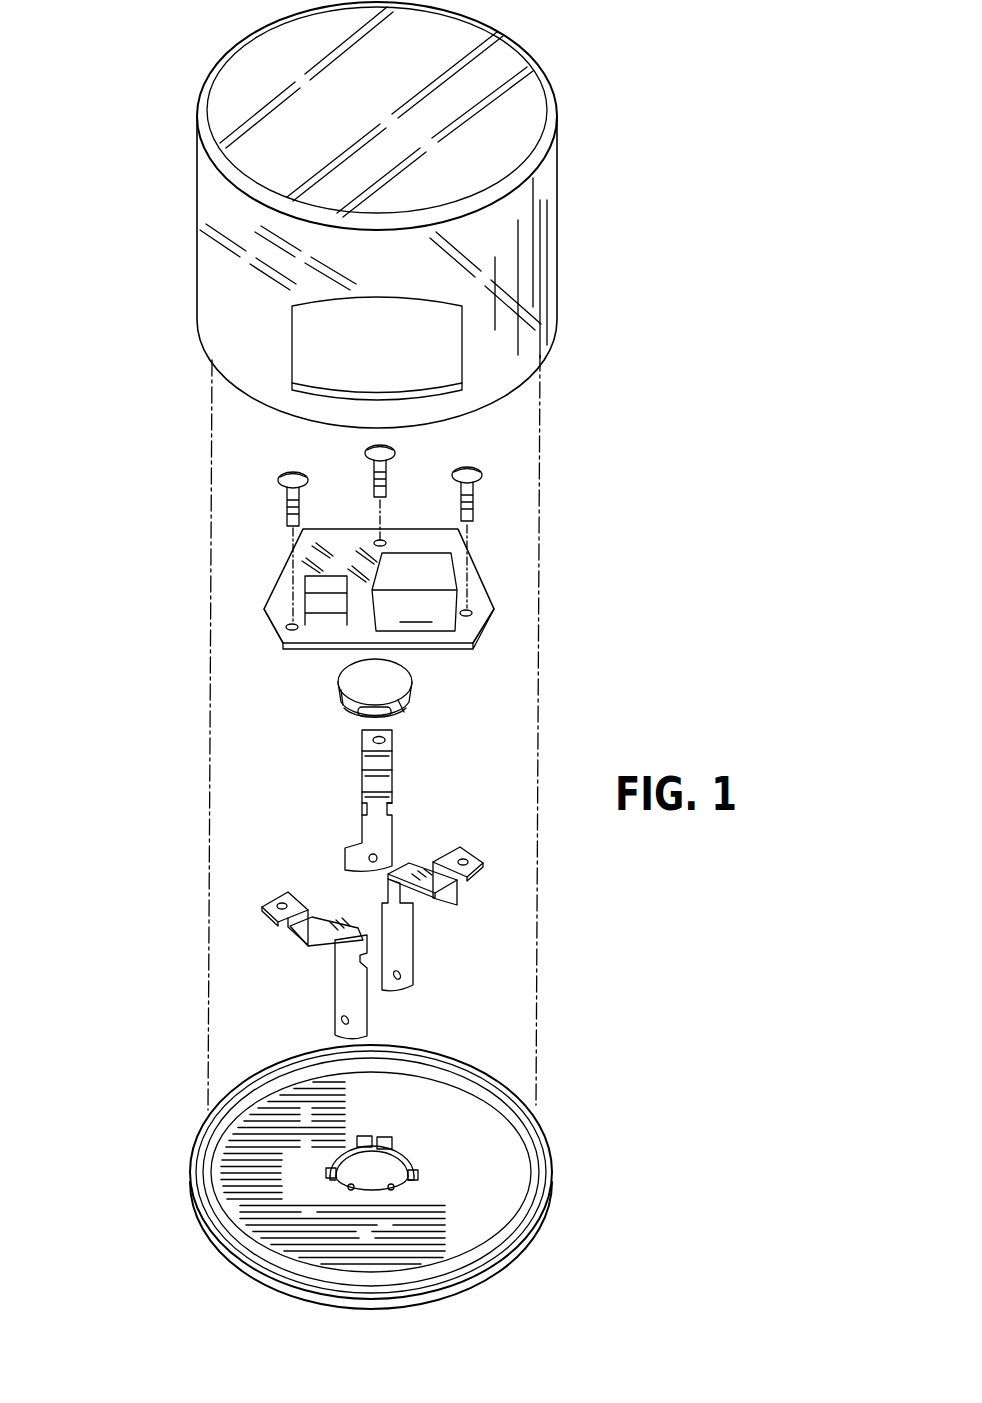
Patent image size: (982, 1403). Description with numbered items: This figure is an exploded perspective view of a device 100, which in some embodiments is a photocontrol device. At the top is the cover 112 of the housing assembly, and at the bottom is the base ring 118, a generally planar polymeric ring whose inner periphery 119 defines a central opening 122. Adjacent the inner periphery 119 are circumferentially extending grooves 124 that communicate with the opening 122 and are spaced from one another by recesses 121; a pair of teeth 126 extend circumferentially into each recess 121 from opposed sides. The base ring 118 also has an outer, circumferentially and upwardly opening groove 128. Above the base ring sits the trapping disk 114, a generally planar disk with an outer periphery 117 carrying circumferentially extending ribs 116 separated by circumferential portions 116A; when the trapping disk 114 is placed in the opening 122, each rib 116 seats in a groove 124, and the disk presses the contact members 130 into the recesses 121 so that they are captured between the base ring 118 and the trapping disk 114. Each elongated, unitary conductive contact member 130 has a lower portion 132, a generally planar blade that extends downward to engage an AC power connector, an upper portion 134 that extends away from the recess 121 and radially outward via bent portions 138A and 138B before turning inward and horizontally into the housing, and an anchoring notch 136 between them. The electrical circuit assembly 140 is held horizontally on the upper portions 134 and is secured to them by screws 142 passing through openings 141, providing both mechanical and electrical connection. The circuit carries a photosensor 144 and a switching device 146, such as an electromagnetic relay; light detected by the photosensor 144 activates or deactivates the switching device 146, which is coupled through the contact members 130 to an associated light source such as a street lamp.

The device 100 is at (116, 314).
The cover 112 is at (553, 201).
The trapping disk 114 is at (412, 700).
The ribs 116 is at (360, 717).
The circumferential portions 116A is at (342, 700).
The outer periphery 117 is at (404, 711).
The base ring 118 is at (551, 1172).
The inner periphery 119 is at (397, 1143).
The recesses 121 is at (350, 1190).
The opening 122 is at (373, 1170).
The grooves 124 is at (400, 1150).
The teeth 126 is at (372, 1137).
The outer groove 128 is at (500, 1083).
The contact members 130 is at (392, 831).
The lower portions 132 is at (410, 968).
The upper portions 134 is at (468, 856).
The anchoring notches 136 is at (362, 805).
The bent portion 138A is at (345, 905).
The bent portion 138B is at (288, 933).
The electrical circuit assembly 140 is at (482, 568).
The openings 141 is at (472, 611).
The screws 142 is at (471, 494).
The photosensor 144 is at (310, 603).
The switching device 146 is at (422, 542).